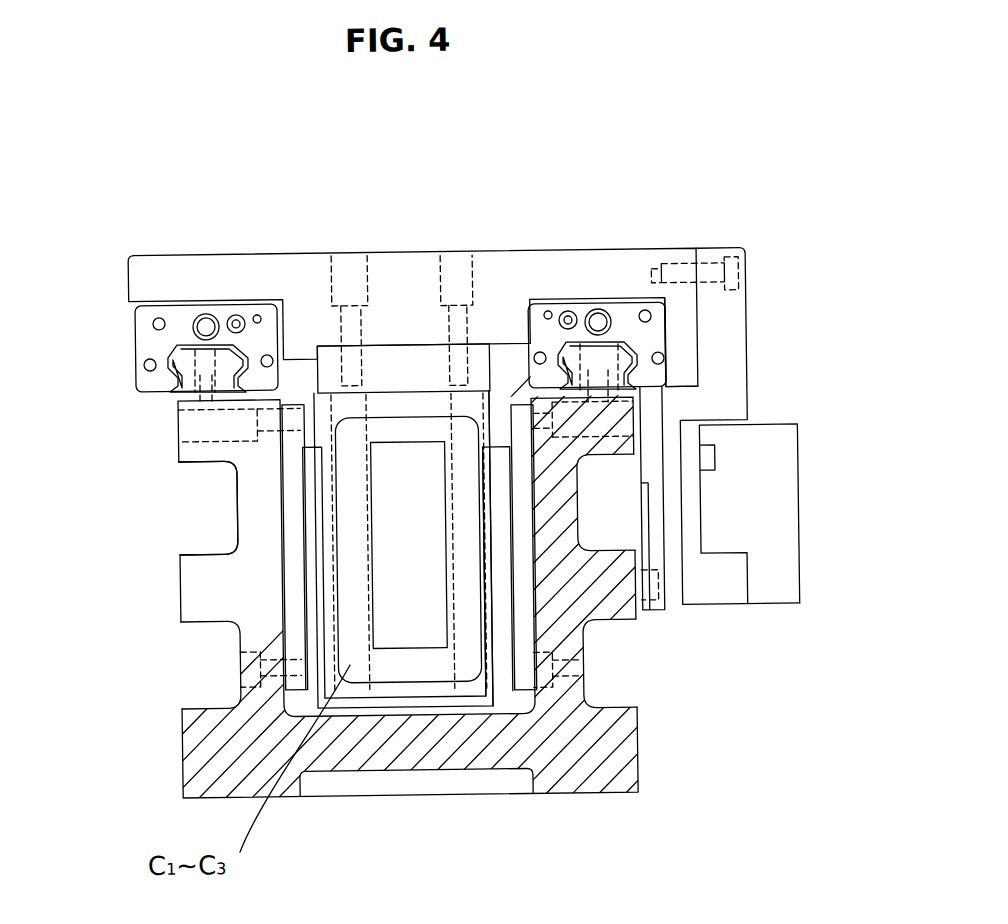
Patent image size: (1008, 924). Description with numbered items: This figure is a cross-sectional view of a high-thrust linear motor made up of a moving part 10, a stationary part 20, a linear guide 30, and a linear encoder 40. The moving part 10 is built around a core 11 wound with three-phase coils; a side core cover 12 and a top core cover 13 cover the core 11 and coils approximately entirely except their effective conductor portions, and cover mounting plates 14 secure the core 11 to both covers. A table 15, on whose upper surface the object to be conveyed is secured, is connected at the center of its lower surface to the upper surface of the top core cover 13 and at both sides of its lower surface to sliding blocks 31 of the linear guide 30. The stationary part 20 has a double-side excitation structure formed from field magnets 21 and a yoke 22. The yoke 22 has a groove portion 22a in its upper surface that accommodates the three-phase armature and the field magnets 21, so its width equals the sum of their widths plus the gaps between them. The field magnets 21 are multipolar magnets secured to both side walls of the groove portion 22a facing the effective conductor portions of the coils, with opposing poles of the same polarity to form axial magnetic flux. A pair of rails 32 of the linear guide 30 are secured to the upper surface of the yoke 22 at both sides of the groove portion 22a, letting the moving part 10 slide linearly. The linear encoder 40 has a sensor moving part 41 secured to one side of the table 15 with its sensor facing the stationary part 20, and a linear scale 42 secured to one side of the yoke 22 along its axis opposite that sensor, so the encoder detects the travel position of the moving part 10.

The moving part 10 is at (505, 241).
The core 11 is at (420, 641).
The side core cover 12 is at (346, 704).
The top core cover 13 is at (336, 362).
The cover mounting plate 14 is at (366, 692).
The table 15 is at (612, 291).
The stationary part 20 is at (607, 814).
The field magnet 21 is at (309, 610).
The yoke 22 is at (211, 490).
The groove portion 22a is at (500, 397).
The linear guide 30 is at (152, 371).
The sliding block 31 is at (151, 350).
The rail 32 is at (182, 398).
The linear encoder 40 is at (766, 459).
The sensor moving part 41 is at (798, 461).
The linear scale 42 is at (647, 616).